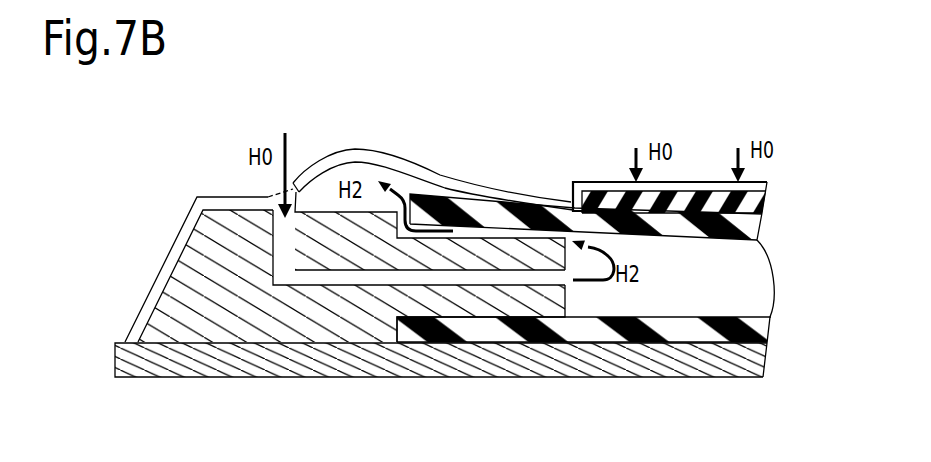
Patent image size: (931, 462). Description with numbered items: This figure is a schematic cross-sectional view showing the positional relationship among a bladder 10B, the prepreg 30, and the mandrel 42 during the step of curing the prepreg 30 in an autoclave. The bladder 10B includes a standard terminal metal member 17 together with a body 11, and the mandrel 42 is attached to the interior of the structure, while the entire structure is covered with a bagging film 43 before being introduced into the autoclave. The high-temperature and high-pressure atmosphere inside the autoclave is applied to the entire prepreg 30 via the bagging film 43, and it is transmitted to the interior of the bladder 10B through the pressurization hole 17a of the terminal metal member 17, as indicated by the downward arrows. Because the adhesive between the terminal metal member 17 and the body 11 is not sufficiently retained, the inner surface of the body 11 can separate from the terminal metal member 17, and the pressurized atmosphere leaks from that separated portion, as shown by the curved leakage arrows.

The bladder 10B is at (226, 177).
The bagging film 43 is at (467, 193).
The prepreg 30 is at (607, 197).
The terminal metal member 17 is at (228, 317).
The pressurization hole 17a is at (462, 278).
The body 11 is at (617, 332).
The mandrel 42 is at (367, 373).